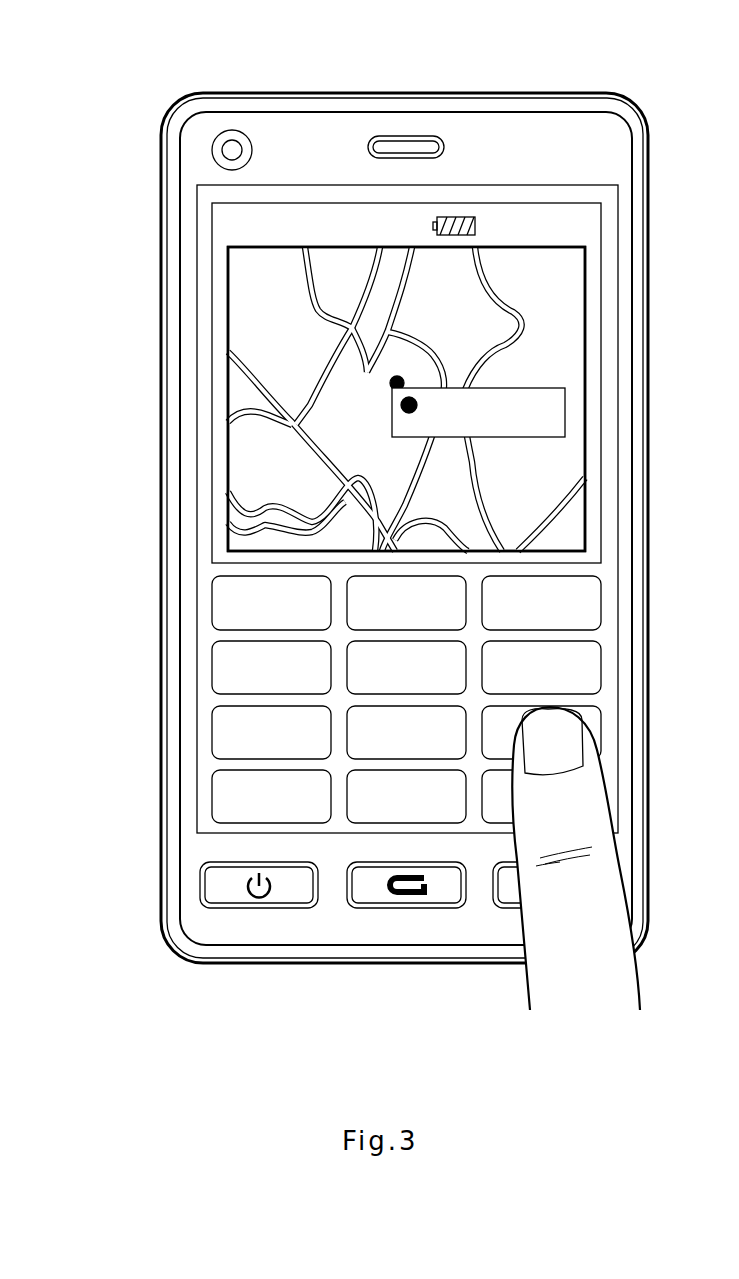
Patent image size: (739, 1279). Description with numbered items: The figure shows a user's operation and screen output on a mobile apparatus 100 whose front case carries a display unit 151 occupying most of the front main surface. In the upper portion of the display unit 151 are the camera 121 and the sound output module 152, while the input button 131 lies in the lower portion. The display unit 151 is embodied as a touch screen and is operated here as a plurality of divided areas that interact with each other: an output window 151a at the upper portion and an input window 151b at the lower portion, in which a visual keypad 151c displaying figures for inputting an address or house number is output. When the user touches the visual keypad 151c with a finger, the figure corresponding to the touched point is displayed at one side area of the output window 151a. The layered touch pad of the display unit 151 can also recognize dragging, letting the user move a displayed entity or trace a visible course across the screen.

The mobile apparatus 100 is at (148, 87).
The camera 121 is at (229, 148).
The sound output module 152 is at (401, 148).
The display unit 151 is at (197, 270).
The output window 151a is at (220, 413).
The input window 151b is at (205, 697).
The visual keypad 151c is at (222, 603).
The input button 131 is at (233, 892).